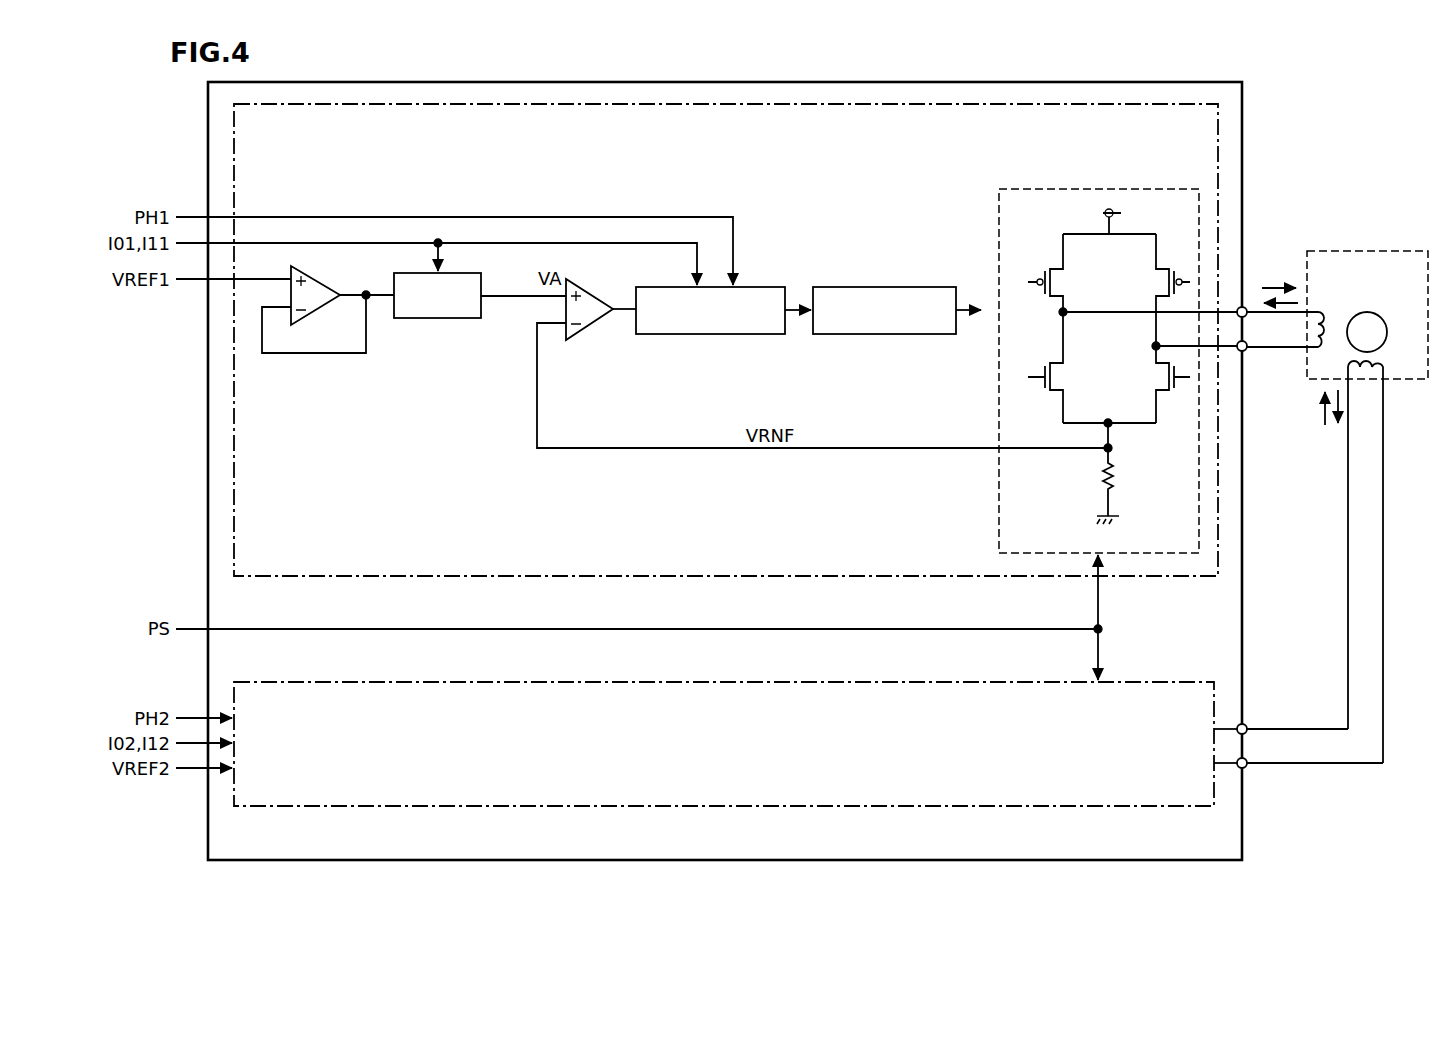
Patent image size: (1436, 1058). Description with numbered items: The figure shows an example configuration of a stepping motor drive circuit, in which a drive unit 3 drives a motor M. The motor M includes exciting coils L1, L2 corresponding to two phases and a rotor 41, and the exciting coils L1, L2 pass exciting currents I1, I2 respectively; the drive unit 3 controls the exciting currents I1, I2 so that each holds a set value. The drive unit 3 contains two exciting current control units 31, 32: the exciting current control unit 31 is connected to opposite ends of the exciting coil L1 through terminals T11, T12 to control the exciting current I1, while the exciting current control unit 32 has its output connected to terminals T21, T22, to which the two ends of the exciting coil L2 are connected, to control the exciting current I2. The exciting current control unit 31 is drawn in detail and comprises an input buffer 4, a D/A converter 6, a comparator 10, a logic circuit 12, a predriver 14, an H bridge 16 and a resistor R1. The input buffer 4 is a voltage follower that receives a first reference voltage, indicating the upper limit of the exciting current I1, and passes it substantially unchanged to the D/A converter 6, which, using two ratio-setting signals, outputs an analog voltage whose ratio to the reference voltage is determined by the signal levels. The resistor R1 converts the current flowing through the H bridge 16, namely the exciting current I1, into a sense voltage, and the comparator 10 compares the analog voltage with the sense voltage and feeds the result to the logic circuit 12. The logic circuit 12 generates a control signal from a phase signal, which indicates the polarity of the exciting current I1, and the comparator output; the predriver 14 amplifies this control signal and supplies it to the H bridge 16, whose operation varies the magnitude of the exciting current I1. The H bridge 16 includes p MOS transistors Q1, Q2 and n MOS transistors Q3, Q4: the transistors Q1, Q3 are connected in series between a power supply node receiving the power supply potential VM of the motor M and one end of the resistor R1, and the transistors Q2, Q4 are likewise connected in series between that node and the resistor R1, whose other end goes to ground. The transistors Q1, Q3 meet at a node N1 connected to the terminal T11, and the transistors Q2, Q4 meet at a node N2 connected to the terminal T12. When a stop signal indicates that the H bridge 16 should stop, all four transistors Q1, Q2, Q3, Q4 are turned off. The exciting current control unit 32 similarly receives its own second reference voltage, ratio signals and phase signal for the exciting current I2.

The drive unit 3 is at (1244, 106).
The exciting current control unit 31 is at (1218, 145).
The exciting current control unit 32 is at (980, 682).
The input buffer 4 is at (322, 275).
The D/A converter 6 is at (437, 318).
The comparator 10 is at (586, 330).
The logic circuit 12 is at (712, 334).
The predriver 14 is at (883, 334).
The H bridge 16 is at (999, 212).
The rotor 41 is at (1366, 312).
The motor M is at (1373, 250).
The exciting coil L1 is at (1322, 308).
The exciting coil L2 is at (1385, 366).
The resistor R1 is at (1116, 480).
The p MOS transistor Q1 is at (1045, 268).
The p MOS transistor Q2 is at (1174, 268).
The n MOS transistor Q3 is at (1045, 388).
The n MOS transistor Q4 is at (1174, 388).
The node N1 is at (1060, 312).
The node N2 is at (1153, 346).
The power supply potential VM is at (1130, 219).
The terminal T11 is at (1246, 307).
The terminal T12 is at (1246, 352).
The terminal T21 is at (1246, 725).
The terminal T22 is at (1246, 768).
The exciting current I1 is at (1280, 282).
The exciting current I2 is at (1319, 410).